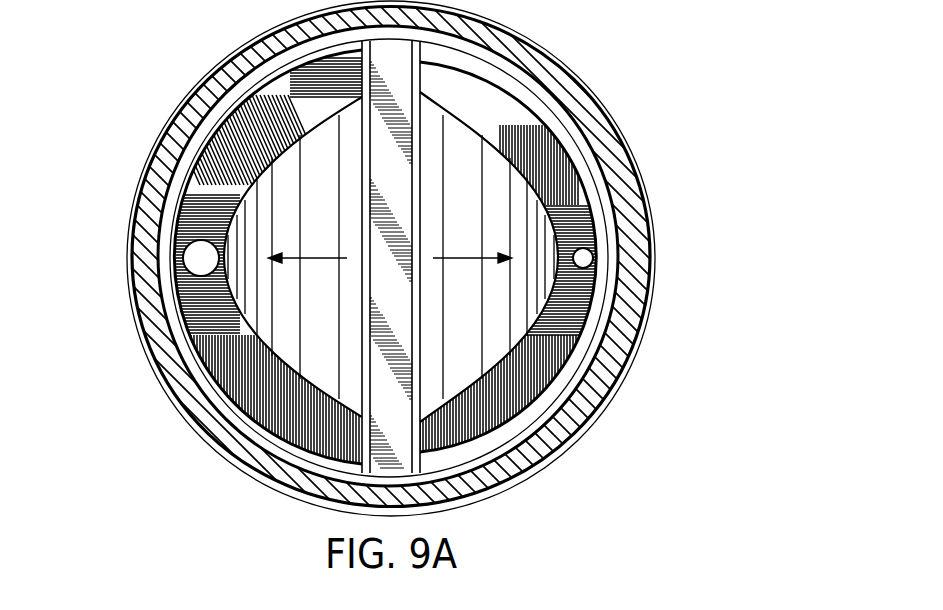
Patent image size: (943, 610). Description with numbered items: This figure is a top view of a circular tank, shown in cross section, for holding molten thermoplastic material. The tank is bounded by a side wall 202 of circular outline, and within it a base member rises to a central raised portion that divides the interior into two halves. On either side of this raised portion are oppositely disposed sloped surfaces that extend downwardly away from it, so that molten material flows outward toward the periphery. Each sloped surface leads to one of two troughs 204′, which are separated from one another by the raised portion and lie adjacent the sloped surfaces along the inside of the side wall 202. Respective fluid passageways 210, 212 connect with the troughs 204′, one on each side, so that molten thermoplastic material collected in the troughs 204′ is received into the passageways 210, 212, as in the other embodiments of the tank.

The side wall 202 is at (150, 180).
The trough 204′ is at (252, 112).
The fluid passageway 210 is at (201, 258).
The fluid passageway 212 is at (583, 258).